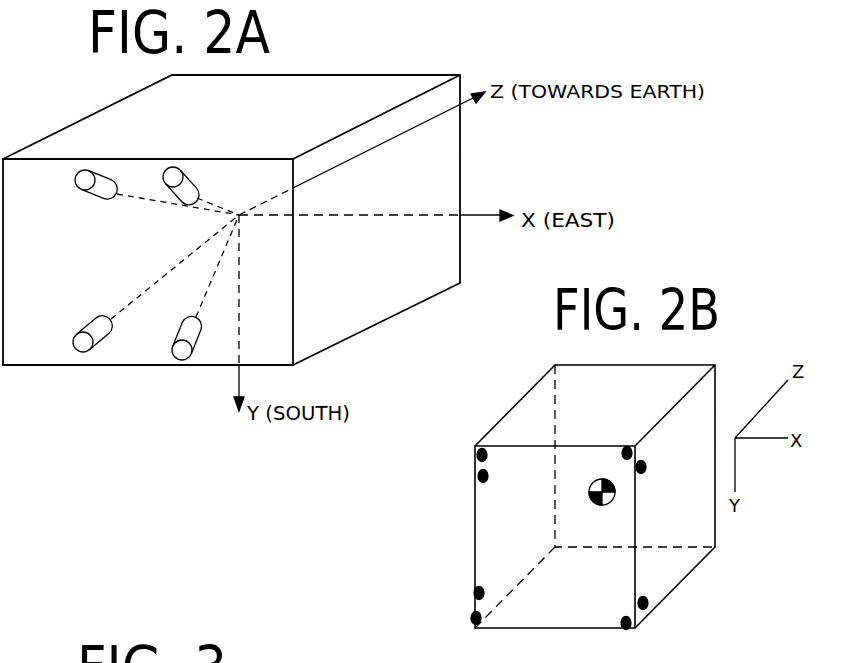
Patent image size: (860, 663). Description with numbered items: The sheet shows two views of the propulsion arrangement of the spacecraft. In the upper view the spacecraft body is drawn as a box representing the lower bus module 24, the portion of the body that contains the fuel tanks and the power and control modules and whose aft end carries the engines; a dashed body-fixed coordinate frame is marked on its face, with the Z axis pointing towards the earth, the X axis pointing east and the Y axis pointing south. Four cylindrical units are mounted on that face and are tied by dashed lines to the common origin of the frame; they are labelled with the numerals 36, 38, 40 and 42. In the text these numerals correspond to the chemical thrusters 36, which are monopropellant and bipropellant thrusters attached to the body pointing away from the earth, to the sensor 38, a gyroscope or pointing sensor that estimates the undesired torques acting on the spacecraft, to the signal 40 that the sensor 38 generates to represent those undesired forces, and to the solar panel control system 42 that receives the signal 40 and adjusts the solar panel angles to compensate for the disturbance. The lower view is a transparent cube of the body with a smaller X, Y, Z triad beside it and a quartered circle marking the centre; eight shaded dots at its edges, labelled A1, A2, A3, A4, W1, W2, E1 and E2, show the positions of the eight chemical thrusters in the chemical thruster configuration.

In FIG. 2A, the lower bus module 24 is at (445, 192).
In FIG. 2A, the chemical thrusters 36 is at (82, 183).
In FIG. 2A, the sensor 38 is at (83, 338).
In FIG. 2A, the signal 40 is at (192, 333).
In FIG. 2A, the solar panel control system 42 is at (191, 184).
In FIG. 2B, the accelerometer A1 is at (469, 455).
In FIG. 2B, the accelerometer A2 is at (459, 618).
In FIG. 2B, the accelerometer A3 is at (612, 455).
In FIG. 2B, the accelerometer A4 is at (624, 605).
In FIG. 2B, the west sensor W1 is at (467, 483).
In FIG. 2B, the west sensor W2 is at (462, 586).
In FIG. 2B, the east sensor E1 is at (654, 457).
In FIG. 2B, the east sensor E2 is at (652, 617).